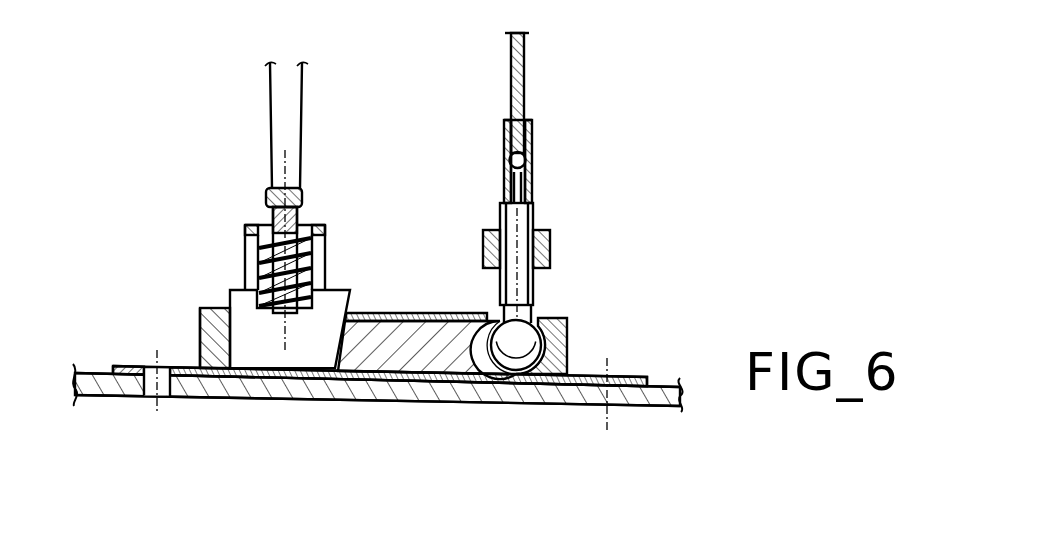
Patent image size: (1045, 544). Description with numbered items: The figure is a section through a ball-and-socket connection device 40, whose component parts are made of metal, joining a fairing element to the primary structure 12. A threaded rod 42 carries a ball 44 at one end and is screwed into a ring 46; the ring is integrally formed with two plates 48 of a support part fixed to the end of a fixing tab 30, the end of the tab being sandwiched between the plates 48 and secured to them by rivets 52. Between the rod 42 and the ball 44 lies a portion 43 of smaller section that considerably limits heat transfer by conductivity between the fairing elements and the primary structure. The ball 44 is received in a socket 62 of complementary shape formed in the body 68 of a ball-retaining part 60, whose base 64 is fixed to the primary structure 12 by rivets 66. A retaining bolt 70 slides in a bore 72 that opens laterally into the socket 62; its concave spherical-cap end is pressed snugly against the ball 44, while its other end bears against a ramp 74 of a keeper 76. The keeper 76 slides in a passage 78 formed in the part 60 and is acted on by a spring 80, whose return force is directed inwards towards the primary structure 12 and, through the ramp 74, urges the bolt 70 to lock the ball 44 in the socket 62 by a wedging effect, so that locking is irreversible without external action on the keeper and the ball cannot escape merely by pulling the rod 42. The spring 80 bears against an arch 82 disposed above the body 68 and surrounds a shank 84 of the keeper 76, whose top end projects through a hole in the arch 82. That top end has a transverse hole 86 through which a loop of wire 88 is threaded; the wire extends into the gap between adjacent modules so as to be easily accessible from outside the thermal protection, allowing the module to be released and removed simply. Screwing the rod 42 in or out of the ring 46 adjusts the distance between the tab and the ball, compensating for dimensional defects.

The primary structure 12 is at (590, 392).
The fixing tab 30 is at (520, 62).
The ball-and-socket connection device 40 is at (660, 265).
The threaded rod 42 is at (522, 223).
The portion of smaller section 43 is at (524, 318).
The ball 44 is at (534, 342).
The ring 46 is at (488, 241).
The plates 48 is at (506, 172).
The rivets 52 is at (532, 158).
The ball-retaining part 60 is at (558, 360).
The socket 62 is at (492, 324).
The base 64 is at (130, 366).
The rivets 66 is at (150, 398).
The body 68 is at (217, 308).
The retaining bolt 70 is at (424, 358).
The bore 72 is at (462, 374).
The ramp 74 is at (337, 342).
The keeper 76 is at (258, 352).
The passage 78 is at (200, 333).
The spring 80 is at (313, 269).
The arch 82 is at (245, 242).
The shank 84 is at (300, 243).
The hole 86 is at (303, 203).
The wire 88 is at (305, 88).